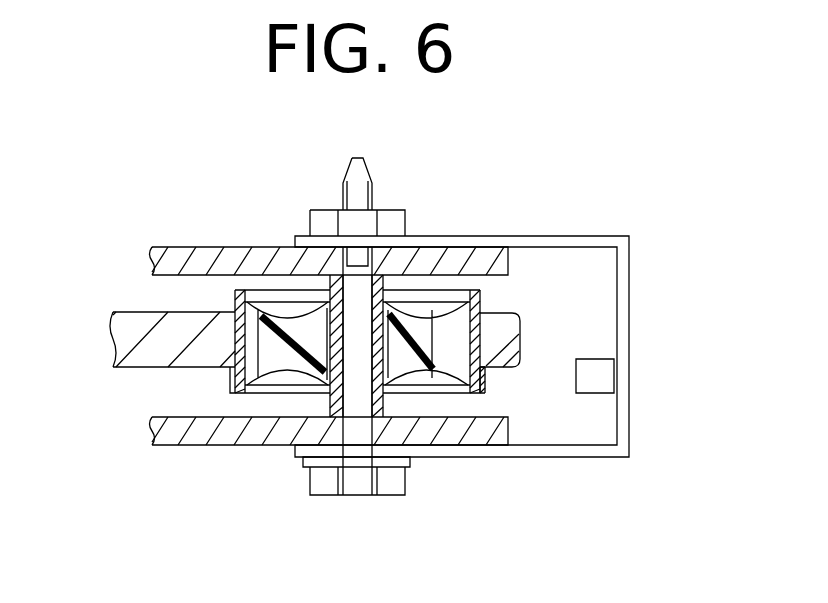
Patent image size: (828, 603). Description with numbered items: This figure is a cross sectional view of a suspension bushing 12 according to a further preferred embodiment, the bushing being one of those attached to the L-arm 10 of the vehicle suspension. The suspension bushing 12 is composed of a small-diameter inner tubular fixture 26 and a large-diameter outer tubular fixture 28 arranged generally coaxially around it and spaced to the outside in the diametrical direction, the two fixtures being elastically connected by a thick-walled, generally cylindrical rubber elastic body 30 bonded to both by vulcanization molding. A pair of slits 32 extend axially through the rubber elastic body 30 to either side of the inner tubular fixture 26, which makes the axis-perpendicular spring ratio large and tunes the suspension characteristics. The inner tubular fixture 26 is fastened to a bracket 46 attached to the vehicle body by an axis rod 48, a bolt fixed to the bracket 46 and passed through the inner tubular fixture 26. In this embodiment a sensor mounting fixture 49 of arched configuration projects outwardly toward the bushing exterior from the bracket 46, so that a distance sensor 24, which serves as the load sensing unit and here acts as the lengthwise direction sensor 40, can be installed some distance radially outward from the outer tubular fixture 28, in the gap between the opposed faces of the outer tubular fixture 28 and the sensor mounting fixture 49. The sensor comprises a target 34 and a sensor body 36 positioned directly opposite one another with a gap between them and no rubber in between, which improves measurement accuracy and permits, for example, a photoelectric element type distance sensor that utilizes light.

The L-arm 10 is at (137, 323).
The suspension bushing 12 is at (278, 392).
The distance sensor 24 is at (589, 357).
The inner tubular fixture 26 is at (378, 400).
The outer tubular fixture 28 is at (237, 301).
The rubber elastic body 30 is at (450, 342).
The slits 32 is at (433, 345).
The target 34 is at (486, 385).
The sensor body 36 is at (603, 378).
The lengthwise direction sensor 40 is at (544, 309).
The bracket 46 is at (197, 437).
The axis rod 48 is at (355, 433).
The sensor mounting fixture 49 is at (590, 236).